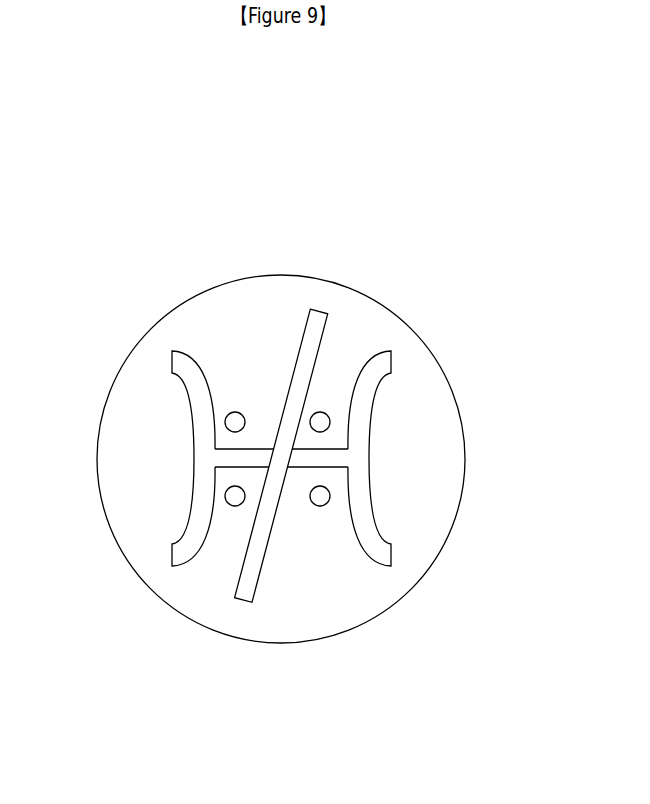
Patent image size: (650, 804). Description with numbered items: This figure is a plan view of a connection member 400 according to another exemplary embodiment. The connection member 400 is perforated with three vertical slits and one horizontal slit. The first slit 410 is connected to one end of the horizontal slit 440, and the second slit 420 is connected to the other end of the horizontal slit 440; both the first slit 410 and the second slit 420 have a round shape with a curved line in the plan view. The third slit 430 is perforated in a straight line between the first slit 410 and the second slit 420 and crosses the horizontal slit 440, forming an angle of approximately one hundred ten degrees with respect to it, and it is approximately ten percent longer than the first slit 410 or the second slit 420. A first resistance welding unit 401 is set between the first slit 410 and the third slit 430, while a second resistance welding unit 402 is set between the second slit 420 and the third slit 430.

The connection member 400 is at (305, 145).
The first resistance welding unit 401 is at (343, 423).
The second resistance welding unit 402 is at (222, 398).
The first slit 410 is at (391, 562).
The second slit 420 is at (172, 563).
The third slit 430 is at (243, 600).
The horizontal slit 440 is at (303, 460).